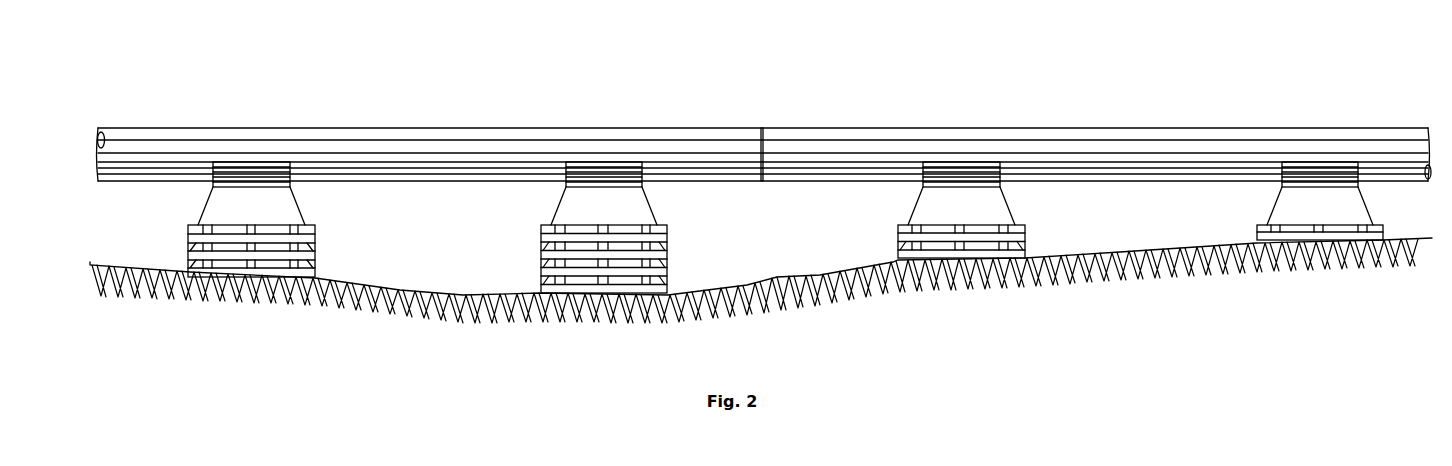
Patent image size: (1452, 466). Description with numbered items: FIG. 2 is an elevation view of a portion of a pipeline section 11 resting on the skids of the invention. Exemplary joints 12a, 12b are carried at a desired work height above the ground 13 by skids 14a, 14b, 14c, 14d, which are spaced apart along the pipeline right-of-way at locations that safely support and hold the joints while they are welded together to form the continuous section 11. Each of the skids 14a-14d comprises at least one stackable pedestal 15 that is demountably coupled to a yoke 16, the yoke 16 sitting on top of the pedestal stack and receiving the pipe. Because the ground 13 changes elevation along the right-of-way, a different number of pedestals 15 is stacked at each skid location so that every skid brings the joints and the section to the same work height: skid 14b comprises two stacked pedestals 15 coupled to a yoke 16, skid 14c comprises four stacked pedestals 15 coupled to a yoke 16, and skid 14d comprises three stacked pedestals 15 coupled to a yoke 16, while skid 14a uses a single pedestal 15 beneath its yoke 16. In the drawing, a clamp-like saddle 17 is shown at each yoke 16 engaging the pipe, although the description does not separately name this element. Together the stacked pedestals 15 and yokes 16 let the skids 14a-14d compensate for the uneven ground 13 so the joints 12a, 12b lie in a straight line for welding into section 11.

The section 11 is at (1262, 110).
The joint 12a is at (853, 145).
The joint 12b is at (486, 133).
The ground 13 is at (763, 280).
The skid 14a is at (1293, 240).
The skid 14b is at (952, 257).
The skid 14c is at (568, 297).
The skid 14d is at (233, 277).
The stackable pedestal 15 is at (316, 246).
The yoke 16 is at (228, 183).
The pipe clamp saddle 17 is at (247, 163).